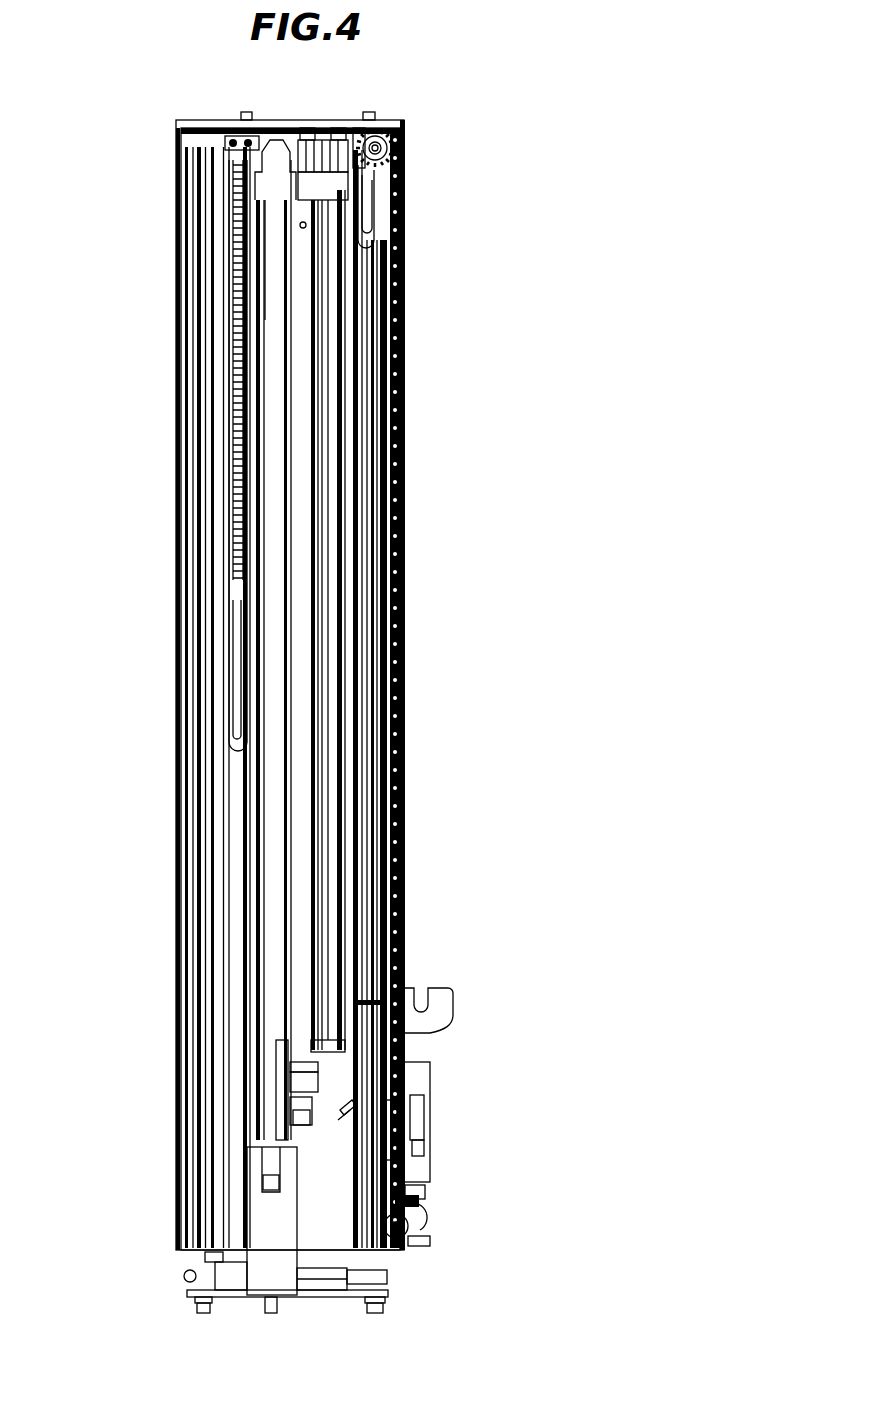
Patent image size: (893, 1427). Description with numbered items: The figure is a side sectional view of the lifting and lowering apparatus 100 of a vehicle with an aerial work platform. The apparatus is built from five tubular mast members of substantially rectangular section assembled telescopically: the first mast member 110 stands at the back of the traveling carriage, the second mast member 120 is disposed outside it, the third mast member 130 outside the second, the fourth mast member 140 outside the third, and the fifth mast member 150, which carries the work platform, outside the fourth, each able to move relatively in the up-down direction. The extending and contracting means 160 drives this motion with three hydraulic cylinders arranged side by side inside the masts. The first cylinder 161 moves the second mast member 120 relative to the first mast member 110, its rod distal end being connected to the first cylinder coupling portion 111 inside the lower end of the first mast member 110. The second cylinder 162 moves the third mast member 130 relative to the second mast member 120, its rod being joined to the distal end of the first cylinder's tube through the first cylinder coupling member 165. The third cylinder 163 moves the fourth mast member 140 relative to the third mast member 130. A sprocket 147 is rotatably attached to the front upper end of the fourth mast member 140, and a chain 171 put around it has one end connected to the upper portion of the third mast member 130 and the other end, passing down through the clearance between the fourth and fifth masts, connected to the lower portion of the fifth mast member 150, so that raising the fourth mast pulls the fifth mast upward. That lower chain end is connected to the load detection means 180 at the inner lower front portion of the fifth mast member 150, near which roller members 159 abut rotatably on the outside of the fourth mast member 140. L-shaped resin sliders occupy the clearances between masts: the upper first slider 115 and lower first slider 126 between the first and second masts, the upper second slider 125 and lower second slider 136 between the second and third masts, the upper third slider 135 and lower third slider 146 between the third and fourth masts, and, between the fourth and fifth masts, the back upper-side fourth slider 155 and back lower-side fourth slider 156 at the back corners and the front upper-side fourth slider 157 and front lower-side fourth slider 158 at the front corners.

The lifting and lowering apparatus 100 is at (166, 118).
The first mast member 110 is at (212, 667).
The first cylinder coupling portion 111 is at (284, 1196).
The upper first slider 115 is at (212, 222).
The second mast member 120 is at (205, 625).
The upper second slider 125 is at (198, 193).
The lower first slider 126 is at (224, 1240).
The third mast member 130 is at (198, 595).
The upper third slider 135 is at (190, 160).
The lower second slider 136 is at (212, 1210).
The fourth mast member 140 is at (193, 560).
The lower third slider 146 is at (198, 1185).
The sprocket 147 is at (392, 146).
The fifth mast member 150 is at (178, 526).
The back upper-side fourth slider 155 is at (176, 957).
The back lower-side fourth slider 156 is at (185, 1172).
The front upper-side fourth slider 157 is at (386, 932).
The front lower-side fourth slider 158 is at (388, 1060).
The roller member 159 is at (418, 1232).
The extending and contracting means 160 is at (244, 878).
The first cylinder 161 is at (272, 855).
The second cylinder 162 is at (302, 820).
The third cylinder 163 is at (328, 790).
The first cylinder coupling member 165 is at (313, 1078).
The chain 171 is at (403, 244).
The load detection means 180 is at (430, 1140).